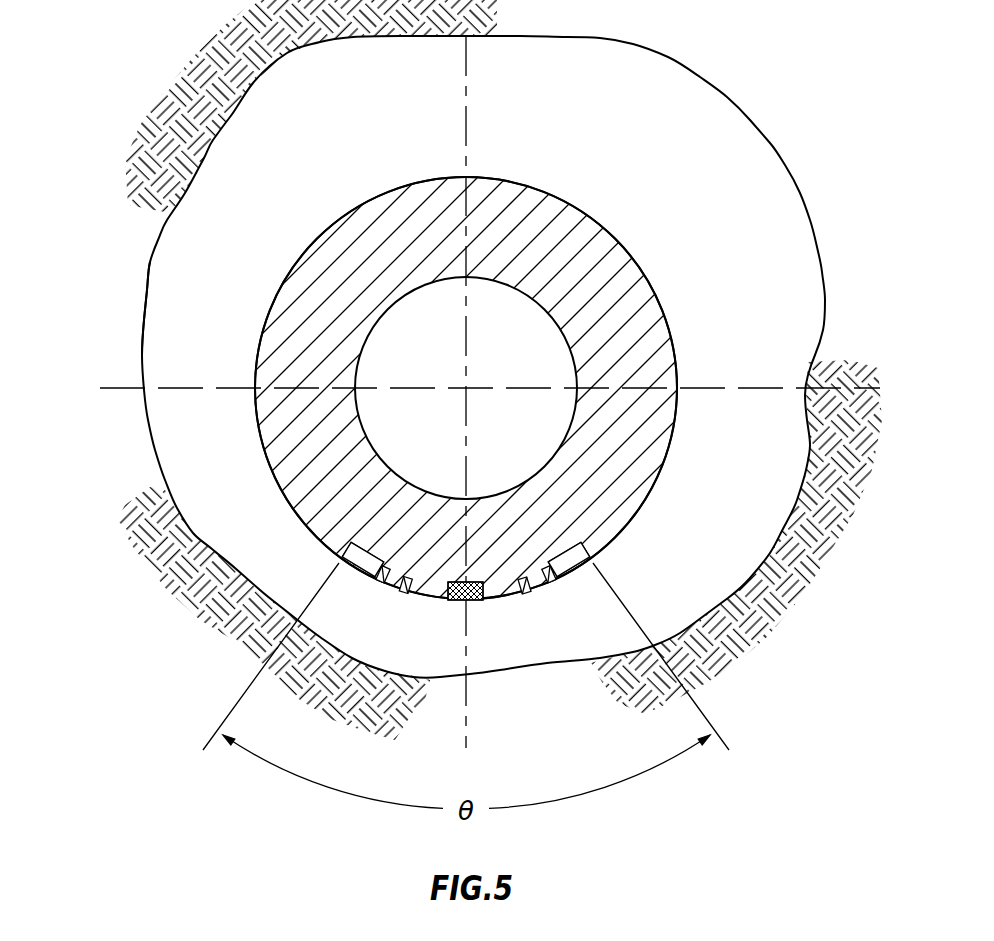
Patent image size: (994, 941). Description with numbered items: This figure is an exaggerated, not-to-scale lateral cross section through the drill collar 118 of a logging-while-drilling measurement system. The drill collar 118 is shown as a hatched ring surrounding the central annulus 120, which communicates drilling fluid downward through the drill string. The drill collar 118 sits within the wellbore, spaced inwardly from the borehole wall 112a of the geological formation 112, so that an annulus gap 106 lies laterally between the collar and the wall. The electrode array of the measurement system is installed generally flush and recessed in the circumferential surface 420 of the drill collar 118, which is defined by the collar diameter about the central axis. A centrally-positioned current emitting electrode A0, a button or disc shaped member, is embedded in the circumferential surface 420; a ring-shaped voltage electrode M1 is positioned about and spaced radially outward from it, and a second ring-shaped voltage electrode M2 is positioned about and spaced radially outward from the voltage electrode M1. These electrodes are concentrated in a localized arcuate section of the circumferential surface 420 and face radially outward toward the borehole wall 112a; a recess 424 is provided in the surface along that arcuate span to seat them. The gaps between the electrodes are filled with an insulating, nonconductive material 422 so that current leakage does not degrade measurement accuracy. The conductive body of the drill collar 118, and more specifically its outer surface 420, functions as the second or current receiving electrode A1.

The annulus gap 106 is at (351, 143).
The geological formation 112 is at (866, 591).
The borehole wall 112a is at (152, 285).
The drill collar 118 is at (627, 273).
The central annulus 120 is at (528, 345).
The circumferential surface 420 is at (672, 320).
The insulating, nonconductive material 422 is at (586, 546).
The recess 424 is at (377, 545).
The current emitting electrode A0 is at (467, 582).
The current receiving electrode A1 is at (345, 552).
The voltage electrode M1 is at (403, 593).
The second voltage electrode M2 is at (381, 581).